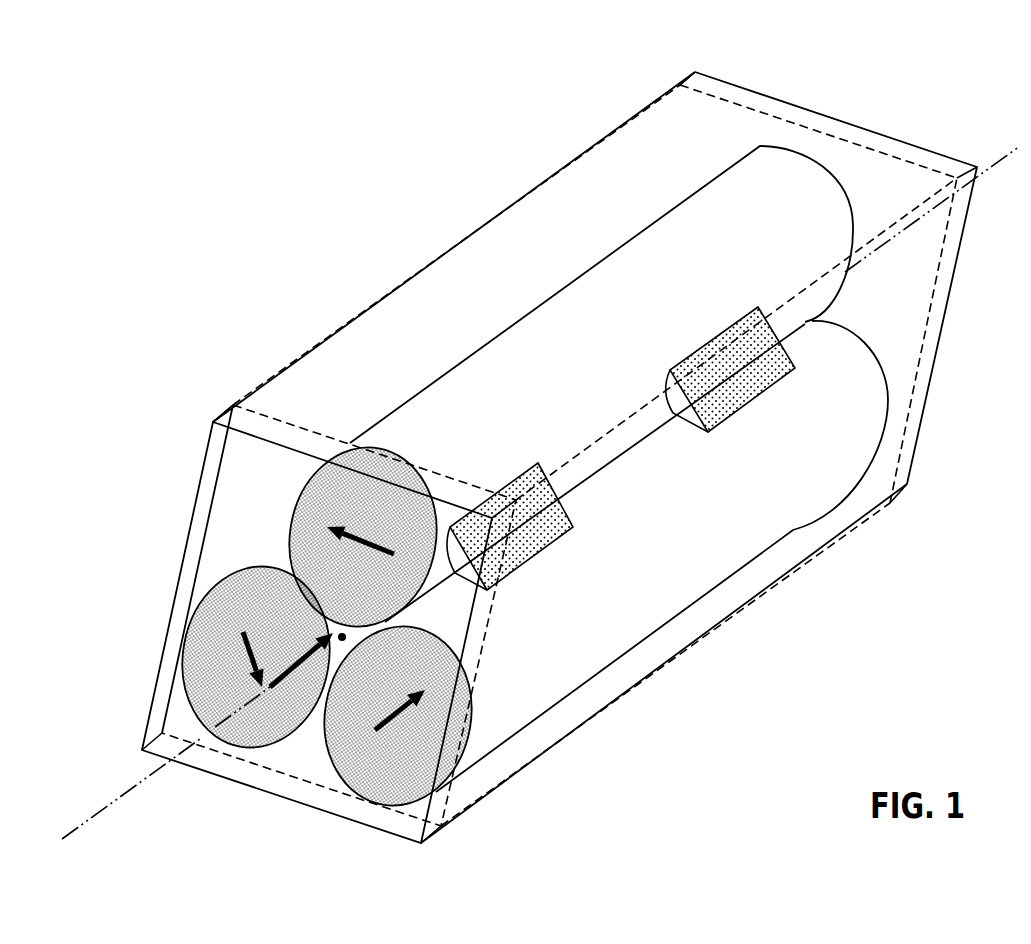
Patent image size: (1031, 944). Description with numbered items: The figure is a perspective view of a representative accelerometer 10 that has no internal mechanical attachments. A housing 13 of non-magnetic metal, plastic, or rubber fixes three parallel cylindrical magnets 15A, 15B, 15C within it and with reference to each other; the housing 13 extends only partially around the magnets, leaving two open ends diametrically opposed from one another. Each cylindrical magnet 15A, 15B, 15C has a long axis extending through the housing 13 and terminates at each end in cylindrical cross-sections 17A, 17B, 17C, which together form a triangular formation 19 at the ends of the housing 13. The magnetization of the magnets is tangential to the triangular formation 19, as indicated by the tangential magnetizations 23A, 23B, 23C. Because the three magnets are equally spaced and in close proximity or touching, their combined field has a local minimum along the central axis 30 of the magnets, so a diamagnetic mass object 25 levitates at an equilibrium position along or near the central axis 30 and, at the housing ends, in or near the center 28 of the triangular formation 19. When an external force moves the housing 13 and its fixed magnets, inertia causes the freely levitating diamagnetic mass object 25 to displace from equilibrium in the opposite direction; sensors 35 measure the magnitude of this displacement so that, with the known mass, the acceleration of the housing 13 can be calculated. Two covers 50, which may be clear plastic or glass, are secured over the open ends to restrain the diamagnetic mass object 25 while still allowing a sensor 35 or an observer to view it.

The accelerometer 10 is at (252, 167).
The housing 13 is at (540, 184).
The cylindrical magnet 15A is at (268, 552).
The cylindrical magnet 15B is at (547, 332).
The cylindrical magnet 15C is at (628, 617).
The cylindrical cross-section 17A is at (196, 657).
The cylindrical cross-section 17B is at (393, 500).
The cylindrical cross-section 17C is at (378, 788).
The triangular formation 19 is at (325, 638).
The tangential magnetization 23A is at (242, 645).
The tangential magnetization 23B is at (364, 545).
The tangential magnetization 23C is at (384, 712).
The diamagnetic mass object 25 is at (291, 670).
The center of the triangular formation 28 is at (338, 626).
The central axis 30 is at (118, 799).
The sensor 35 is at (675, 415).
The cover 50 is at (695, 72).